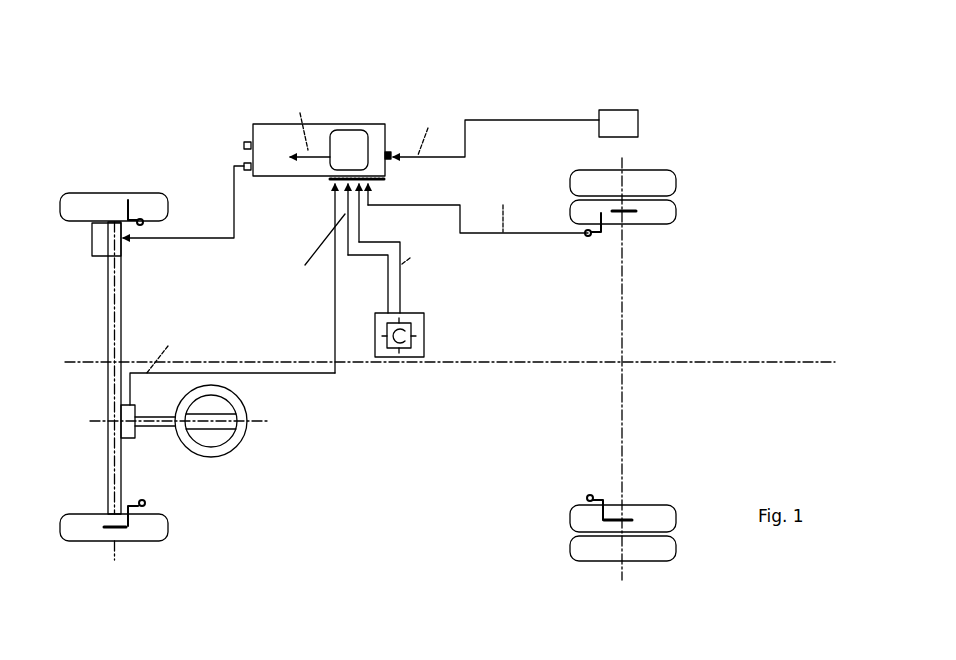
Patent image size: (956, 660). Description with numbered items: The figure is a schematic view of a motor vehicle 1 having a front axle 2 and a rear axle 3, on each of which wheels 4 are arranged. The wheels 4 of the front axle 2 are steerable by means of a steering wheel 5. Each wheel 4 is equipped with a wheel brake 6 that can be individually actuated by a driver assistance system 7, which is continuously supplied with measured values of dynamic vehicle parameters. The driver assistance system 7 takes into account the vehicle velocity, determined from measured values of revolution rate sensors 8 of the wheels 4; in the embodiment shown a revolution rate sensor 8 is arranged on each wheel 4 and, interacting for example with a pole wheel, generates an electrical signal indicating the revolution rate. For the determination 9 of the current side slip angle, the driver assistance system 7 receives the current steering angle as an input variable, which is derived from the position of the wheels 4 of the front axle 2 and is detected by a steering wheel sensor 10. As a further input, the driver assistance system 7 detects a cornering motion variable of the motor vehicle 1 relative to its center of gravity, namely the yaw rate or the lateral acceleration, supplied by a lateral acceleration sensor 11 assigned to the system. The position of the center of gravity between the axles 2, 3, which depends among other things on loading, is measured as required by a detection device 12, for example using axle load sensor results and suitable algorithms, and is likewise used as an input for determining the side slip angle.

The motor vehicle 1 is at (751, 150).
The front axle 2 is at (113, 192).
The rear axle 3 is at (625, 180).
The wheel 4 is at (677, 210).
The steering wheel 5 is at (247, 420).
The wheel brake 6 is at (95, 254).
The driver assistance system 7 is at (253, 124).
The revolution rate sensor 8 is at (126, 205).
The determination 9 is at (356, 130).
The steering wheel sensor 10 is at (135, 437).
The lateral acceleration sensor 11 is at (424, 322).
The detection device 12 is at (620, 118).